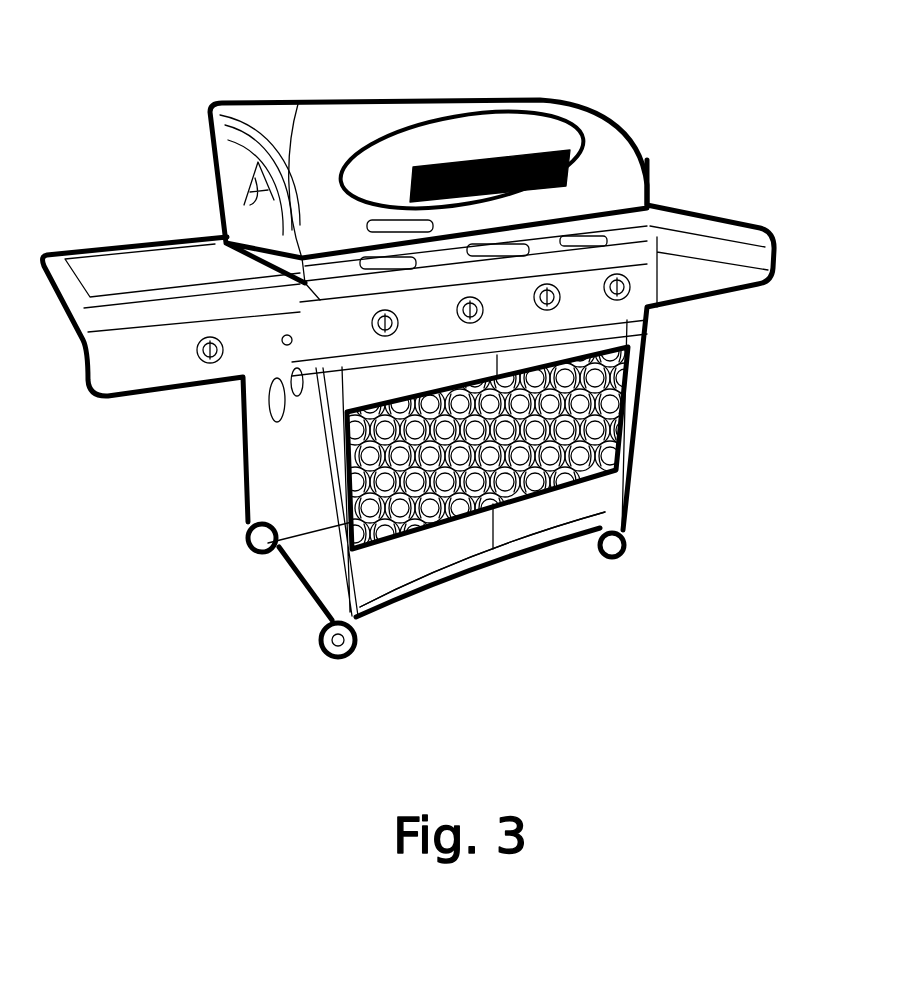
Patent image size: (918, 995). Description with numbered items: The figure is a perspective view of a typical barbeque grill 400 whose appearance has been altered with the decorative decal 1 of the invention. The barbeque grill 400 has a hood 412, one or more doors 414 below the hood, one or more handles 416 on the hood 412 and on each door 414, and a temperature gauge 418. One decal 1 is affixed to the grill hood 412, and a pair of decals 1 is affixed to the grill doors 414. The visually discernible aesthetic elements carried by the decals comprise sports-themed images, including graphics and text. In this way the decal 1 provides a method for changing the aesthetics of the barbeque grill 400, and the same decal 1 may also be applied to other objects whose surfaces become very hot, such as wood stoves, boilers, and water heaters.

The barbeque grill 400 is at (222, 233).
The hood 412 is at (318, 128).
The temperature gauge 418 is at (477, 118).
The handles 416 is at (537, 220).
The doors 414 is at (590, 347).
The decorative decal 1 is at (550, 124).